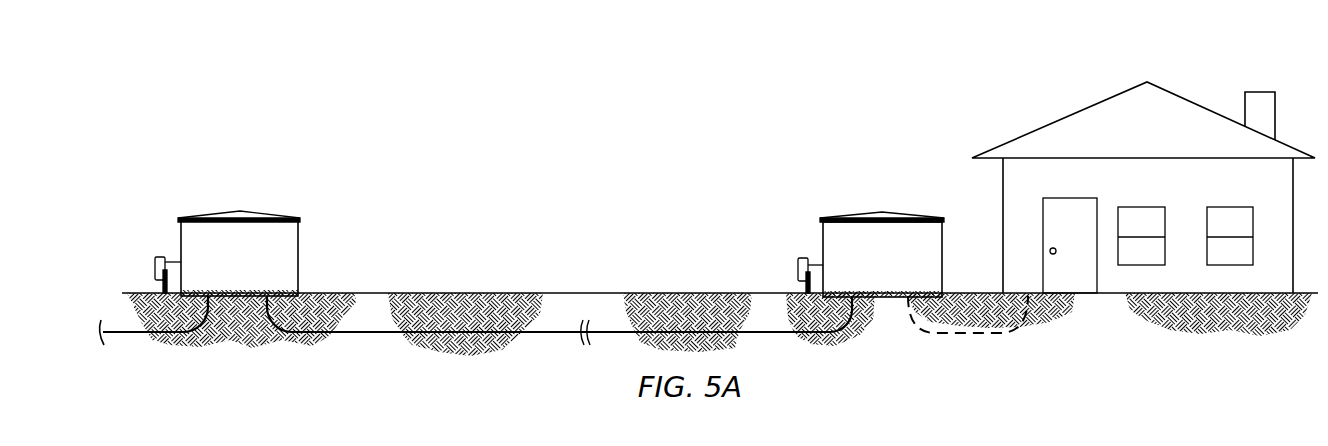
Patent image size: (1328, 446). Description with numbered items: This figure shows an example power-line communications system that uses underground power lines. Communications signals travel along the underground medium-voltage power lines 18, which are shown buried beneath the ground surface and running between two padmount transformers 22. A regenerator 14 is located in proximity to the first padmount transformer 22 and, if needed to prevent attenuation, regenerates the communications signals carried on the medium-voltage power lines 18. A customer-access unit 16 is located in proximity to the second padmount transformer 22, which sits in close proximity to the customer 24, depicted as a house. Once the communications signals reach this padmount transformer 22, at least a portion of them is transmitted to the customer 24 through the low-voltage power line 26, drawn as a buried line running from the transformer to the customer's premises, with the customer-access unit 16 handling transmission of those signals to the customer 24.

The regenerator 14 is at (160, 256).
The customer-access unit 16 is at (801, 257).
The underground medium-voltage power line 18 is at (122, 334).
The padmount transformer 22 is at (268, 214).
The customer 24 is at (1058, 118).
The low-voltage power line 26 is at (959, 335).